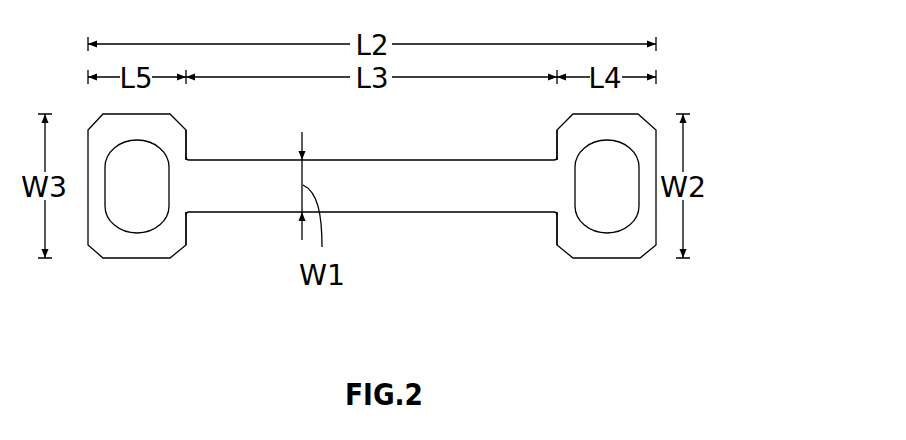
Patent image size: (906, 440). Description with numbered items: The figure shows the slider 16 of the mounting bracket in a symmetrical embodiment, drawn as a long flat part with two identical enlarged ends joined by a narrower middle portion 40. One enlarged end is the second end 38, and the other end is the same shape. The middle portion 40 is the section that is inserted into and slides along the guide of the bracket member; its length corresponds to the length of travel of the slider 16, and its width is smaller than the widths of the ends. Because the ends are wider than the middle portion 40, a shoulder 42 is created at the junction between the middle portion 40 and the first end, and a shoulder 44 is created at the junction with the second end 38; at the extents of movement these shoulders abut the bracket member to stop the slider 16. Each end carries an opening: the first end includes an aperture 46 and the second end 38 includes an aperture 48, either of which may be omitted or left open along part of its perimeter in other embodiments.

The slider 16 is at (430, 167).
The second end 38 is at (103, 259).
The middle portion 40 is at (478, 197).
The shoulder 42 is at (557, 145).
The shoulder 44 is at (186, 145).
The aperture 46 is at (607, 240).
The aperture 48 is at (140, 240).